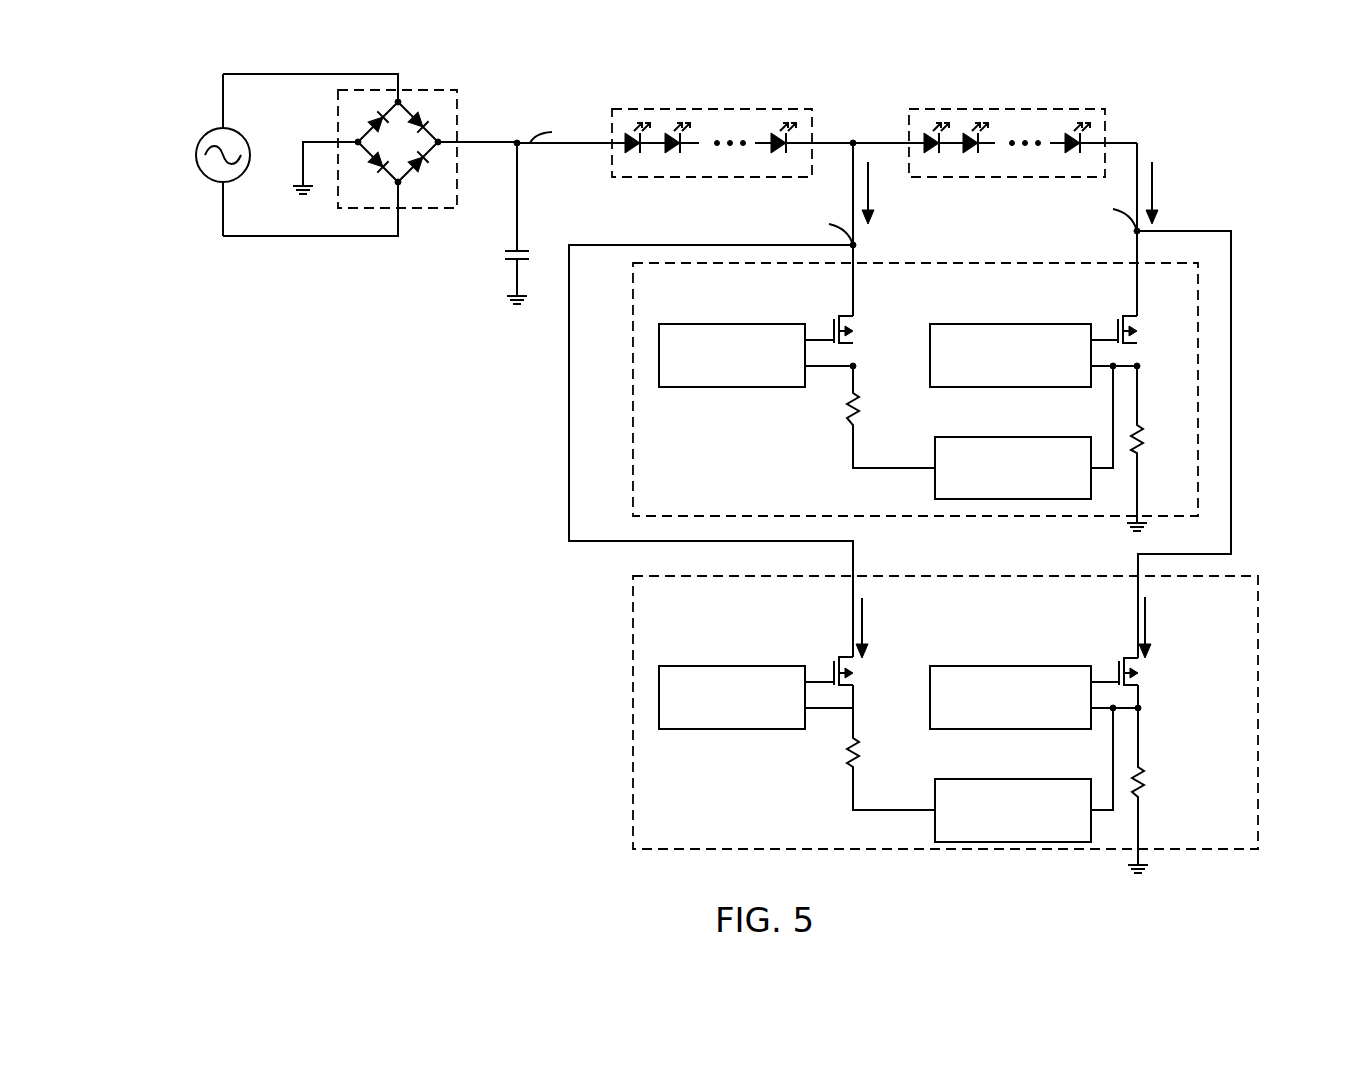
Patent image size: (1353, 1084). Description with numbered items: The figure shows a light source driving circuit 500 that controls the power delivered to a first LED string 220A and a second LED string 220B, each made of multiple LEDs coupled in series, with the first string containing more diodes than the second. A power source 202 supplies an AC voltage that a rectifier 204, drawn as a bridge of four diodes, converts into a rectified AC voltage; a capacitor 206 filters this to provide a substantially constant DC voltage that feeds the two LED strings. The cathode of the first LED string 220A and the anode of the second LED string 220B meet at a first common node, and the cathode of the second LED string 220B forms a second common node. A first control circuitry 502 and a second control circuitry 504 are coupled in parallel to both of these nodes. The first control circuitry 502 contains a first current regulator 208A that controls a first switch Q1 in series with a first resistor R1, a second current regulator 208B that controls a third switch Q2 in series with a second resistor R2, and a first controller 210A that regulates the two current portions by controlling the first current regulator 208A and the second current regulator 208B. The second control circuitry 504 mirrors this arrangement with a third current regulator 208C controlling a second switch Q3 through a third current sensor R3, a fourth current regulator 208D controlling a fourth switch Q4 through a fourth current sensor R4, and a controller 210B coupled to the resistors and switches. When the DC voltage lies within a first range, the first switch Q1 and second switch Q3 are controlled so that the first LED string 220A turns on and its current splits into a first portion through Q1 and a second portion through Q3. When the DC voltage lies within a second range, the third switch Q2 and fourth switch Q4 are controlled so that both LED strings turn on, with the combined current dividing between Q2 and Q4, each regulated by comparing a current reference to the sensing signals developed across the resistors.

The light source driving circuit 500 is at (266, 385).
The power source 202 is at (207, 135).
The rectifier 204 is at (457, 118).
The capacitor 206 is at (520, 250).
The first LED string 220A is at (725, 109).
The second LED string 220B is at (1020, 109).
The first control circuitry 502 is at (1003, 263).
The second control circuitry 504 is at (995, 577).
The first current regulator 208A is at (736, 324).
The second current regulator 208B is at (1021, 324).
The third current regulator 208C is at (736, 666).
The fourth current regulator 208D is at (1021, 666).
The first controller 210A is at (986, 437).
The controller 210B is at (986, 779).
The first switch Q1 is at (845, 318).
The third switch Q2 is at (1128, 318).
The second switch Q3 is at (845, 660).
The fourth switch Q4 is at (1130, 660).
The first resistor R1 is at (858, 416).
The second resistor R2 is at (1142, 450).
The third current sensor R3 is at (858, 760).
The fourth current sensor R4 is at (1143, 785).